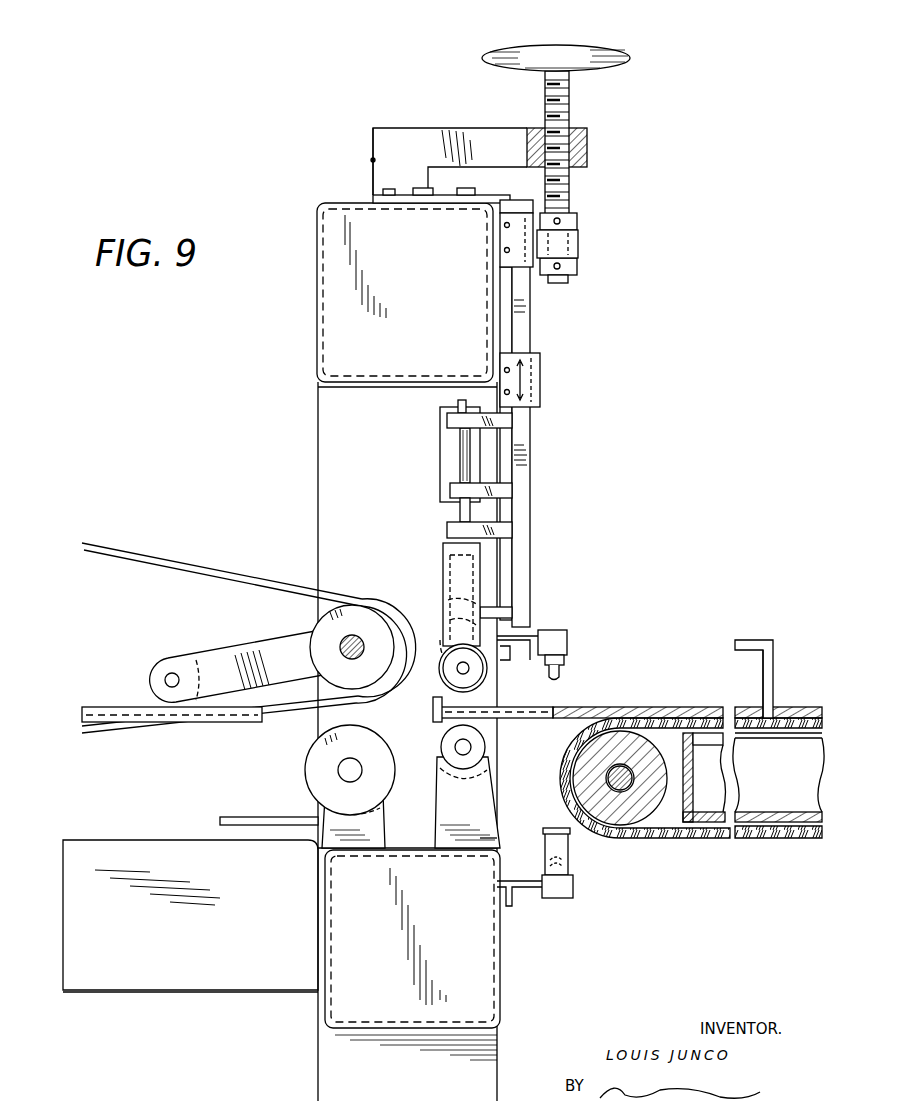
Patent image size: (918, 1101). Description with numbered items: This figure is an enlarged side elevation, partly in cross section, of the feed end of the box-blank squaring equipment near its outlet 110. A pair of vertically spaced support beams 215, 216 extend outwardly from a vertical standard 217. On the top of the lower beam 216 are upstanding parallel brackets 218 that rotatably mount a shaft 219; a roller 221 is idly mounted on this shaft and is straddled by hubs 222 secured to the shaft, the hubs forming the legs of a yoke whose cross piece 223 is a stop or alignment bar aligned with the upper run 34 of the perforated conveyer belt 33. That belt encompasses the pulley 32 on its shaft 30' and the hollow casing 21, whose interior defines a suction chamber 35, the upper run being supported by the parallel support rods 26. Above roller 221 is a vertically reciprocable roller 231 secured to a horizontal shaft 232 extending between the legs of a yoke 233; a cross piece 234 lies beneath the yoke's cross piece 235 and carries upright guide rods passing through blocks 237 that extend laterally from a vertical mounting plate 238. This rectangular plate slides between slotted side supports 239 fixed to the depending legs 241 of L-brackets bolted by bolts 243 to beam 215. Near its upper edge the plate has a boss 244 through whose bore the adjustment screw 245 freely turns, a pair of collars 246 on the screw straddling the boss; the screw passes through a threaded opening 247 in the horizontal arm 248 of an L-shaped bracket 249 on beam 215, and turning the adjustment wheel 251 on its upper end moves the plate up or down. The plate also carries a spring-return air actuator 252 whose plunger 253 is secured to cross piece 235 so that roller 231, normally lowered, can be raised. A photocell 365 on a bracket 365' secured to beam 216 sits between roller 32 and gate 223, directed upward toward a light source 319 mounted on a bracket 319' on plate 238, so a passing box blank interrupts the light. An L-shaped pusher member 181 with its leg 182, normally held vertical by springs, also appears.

The adjustment wheel 251 is at (568, 46).
The horizontal arm 248 is at (468, 140).
The bolts 243 is at (470, 188).
The L-shaped bracket 249 is at (371, 160).
The threaded opening 247 is at (590, 138).
The adjustment screw 245 is at (572, 186).
The collars 246 is at (580, 218).
The boss 244 is at (580, 243).
The support beam 215 is at (335, 236).
The slotted side supports 239 is at (518, 240).
The depending legs 241 is at (505, 313).
The vertical standard 217 is at (335, 410).
The vertical mounting plate 238 is at (525, 423).
The air actuator 252 is at (452, 452).
The plunger 253 is at (452, 510).
The blocks 237 is at (500, 527).
The cross piece of the yoke 235 is at (440, 558).
The yoke 233 is at (432, 637).
The cross piece 234 is at (443, 668).
The vertically reciprocable roller 231 is at (487, 667).
The horizontal shaft 232 is at (468, 672).
The light source 319 is at (554, 635).
The bracket 319' is at (538, 613).
The outlet 110 is at (433, 690).
The cross piece 223 is at (433, 705).
The hubs 222 is at (437, 740).
The shaft 219 is at (463, 752).
The roller 221 is at (487, 742).
The upstanding parallel brackets 218 is at (480, 840).
The support beam 216 is at (345, 993).
The perforated conveyer belt 33 is at (762, 846).
The pulley 32 is at (650, 795).
The shaft 30' is at (617, 823).
The hollow casing 21 is at (690, 790).
The upper run 34 is at (805, 710).
The support rods 26 is at (758, 735).
The suction chamber 35 is at (783, 822).
The L-shaped pusher member 181 is at (781, 648).
The leg 182 is at (762, 672).
The photocell 365 is at (567, 872).
The bracket 365' is at (522, 910).